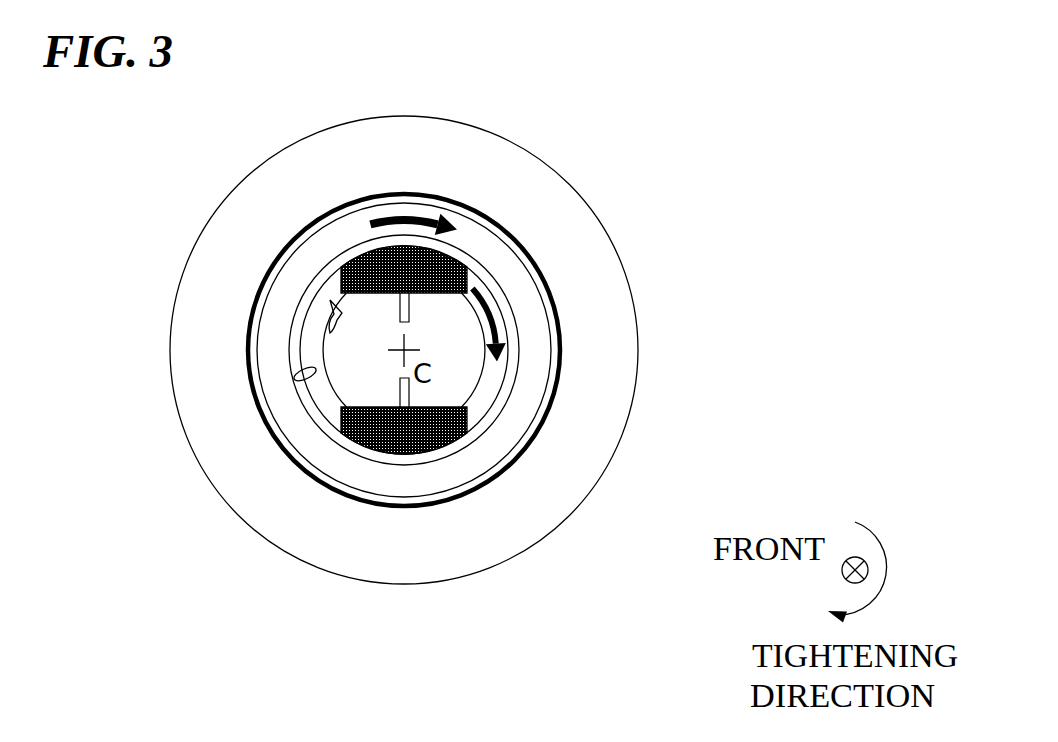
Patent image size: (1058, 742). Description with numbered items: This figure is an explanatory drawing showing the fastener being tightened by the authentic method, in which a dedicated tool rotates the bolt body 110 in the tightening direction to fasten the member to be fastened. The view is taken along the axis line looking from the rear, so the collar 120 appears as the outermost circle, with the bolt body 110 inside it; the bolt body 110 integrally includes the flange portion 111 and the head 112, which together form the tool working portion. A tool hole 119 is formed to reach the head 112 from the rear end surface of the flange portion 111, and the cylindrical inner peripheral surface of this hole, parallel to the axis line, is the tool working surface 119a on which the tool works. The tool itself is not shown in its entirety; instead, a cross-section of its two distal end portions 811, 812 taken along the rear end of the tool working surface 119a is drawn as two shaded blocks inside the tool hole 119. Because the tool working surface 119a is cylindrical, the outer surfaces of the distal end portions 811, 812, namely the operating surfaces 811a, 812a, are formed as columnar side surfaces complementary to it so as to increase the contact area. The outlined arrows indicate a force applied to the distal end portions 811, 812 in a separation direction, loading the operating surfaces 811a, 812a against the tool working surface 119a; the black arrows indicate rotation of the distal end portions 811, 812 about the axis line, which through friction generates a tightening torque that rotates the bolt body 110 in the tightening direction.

The bolt body 110 is at (560, 318).
The flange portion 111 is at (510, 425).
The head 112 is at (508, 427).
The tool hole 119 is at (336, 314).
The tool working surface 119a is at (305, 376).
The collar 120 is at (607, 230).
The tool distal end portion 811 is at (342, 278).
The operating surface 811a is at (457, 262).
The tool distal end portion 812 is at (340, 428).
The operating surface 812a is at (400, 452).